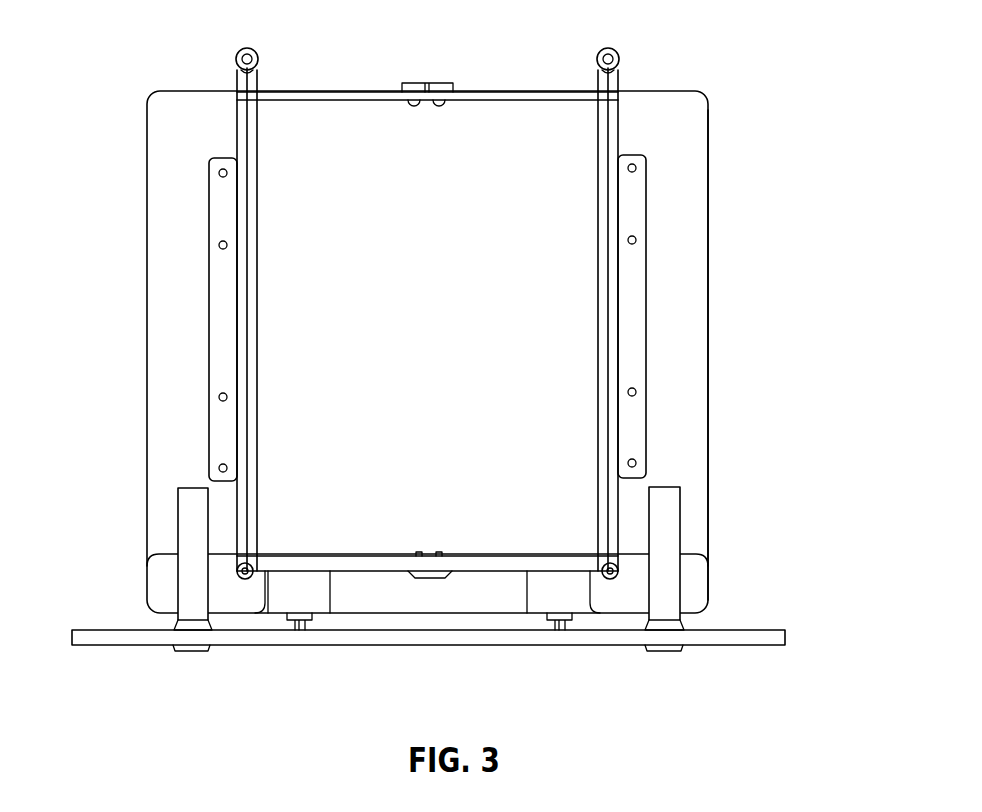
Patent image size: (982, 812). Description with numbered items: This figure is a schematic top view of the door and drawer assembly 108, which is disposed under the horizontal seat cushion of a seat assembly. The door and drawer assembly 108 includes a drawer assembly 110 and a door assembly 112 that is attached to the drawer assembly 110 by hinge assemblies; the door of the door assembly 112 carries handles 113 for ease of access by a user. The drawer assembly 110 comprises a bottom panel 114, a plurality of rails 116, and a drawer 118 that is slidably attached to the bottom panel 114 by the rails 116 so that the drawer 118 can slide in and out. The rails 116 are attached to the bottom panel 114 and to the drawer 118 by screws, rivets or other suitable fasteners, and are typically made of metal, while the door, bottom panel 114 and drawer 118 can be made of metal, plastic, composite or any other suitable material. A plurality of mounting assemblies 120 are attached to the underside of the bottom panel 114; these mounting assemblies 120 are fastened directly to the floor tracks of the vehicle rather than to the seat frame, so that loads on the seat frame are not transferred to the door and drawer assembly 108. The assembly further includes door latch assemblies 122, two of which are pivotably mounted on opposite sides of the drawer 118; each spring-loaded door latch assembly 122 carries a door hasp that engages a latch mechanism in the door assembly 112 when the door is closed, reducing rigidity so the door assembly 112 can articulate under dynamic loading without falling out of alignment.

The door and drawer assembly 108 is at (167, 40).
The drawer assembly 110 is at (645, 128).
The door assembly 112 is at (763, 616).
The handles 113 is at (190, 652).
The bottom panel 114 is at (708, 264).
The rails 116 is at (221, 302).
The drawer 118 is at (378, 574).
The mounting assemblies 120 is at (259, 62).
The door latch assembly 122 is at (189, 521).